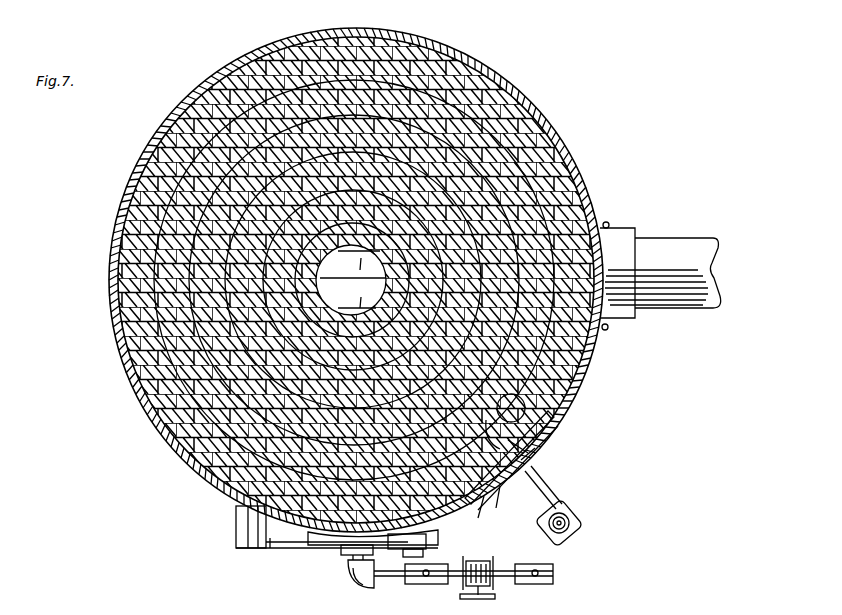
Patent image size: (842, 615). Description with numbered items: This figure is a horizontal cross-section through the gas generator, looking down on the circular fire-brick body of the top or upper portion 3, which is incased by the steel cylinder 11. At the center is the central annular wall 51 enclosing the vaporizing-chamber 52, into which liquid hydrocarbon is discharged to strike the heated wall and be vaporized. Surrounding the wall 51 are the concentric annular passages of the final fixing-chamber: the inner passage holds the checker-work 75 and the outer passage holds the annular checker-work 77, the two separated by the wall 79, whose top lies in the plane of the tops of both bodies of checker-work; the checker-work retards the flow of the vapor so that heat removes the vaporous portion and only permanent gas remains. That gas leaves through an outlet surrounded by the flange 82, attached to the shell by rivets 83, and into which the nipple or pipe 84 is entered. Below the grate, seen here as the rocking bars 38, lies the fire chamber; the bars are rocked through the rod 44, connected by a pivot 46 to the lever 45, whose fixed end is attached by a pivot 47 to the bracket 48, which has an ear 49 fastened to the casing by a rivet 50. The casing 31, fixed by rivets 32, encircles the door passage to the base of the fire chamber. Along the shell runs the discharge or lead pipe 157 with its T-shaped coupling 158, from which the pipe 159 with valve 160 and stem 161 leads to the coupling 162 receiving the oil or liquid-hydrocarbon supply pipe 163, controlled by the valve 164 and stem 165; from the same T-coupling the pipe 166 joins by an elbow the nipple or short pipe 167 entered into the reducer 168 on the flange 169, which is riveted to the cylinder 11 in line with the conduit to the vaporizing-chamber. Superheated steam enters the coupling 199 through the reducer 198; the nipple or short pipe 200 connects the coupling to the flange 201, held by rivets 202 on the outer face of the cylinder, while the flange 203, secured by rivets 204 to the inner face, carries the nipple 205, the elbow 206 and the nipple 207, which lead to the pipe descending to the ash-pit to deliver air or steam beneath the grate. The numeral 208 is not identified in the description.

The top or upper portion 3 is at (447, 53).
The cylinder 11 is at (487, 82).
The casing 31 is at (290, 541).
The rivets 32 is at (280, 548).
The rocking bars 38 is at (370, 283).
The rod 44 is at (240, 528).
The lever 45 is at (240, 546).
The pivot 46 is at (236, 538).
The pivot 47 is at (272, 545).
The bracket 48 is at (248, 546).
The ear 49 is at (240, 505).
The rivet 50 is at (228, 513).
The central annular wall 51 is at (351, 280).
The vaporizing-chamber 52 is at (336, 294).
The checker-work 75 is at (520, 152).
The annular checker-work 77 is at (548, 162).
The wall 79 is at (480, 142).
The flange 82 is at (618, 230).
The rivets 83 is at (600, 216).
The nipple or pipe 84 is at (663, 273).
The discharge or lead pipe 157 is at (527, 560).
The T-shaped coupling 158 is at (530, 578).
The pipe 159 is at (482, 555).
The valve 160 is at (476, 591).
The stem 161 is at (463, 556).
The coupling 162 is at (436, 577).
The oil or liquid-hydrocarbon supply pipe 163 is at (424, 558).
The valve 164 is at (420, 577).
The stem 165 is at (400, 574).
The pipe 166 is at (341, 562).
The nipple or short pipe 167 is at (340, 546).
The reducer 168 is at (400, 543).
The flange 169 is at (373, 540).
The reducer 198 is at (563, 512).
The coupling 199 is at (556, 503).
The nipple or short pipe 200 is at (520, 471).
The flange 201 is at (528, 459).
The rivets 202 is at (530, 446).
The nipple 205 is at (526, 432).
The elbow 206 is at (528, 416).
The nipple 207 is at (530, 405).
The valve ball 208 is at (535, 393).
The flange 203 is at (502, 505).
The rivets 204 is at (471, 516).